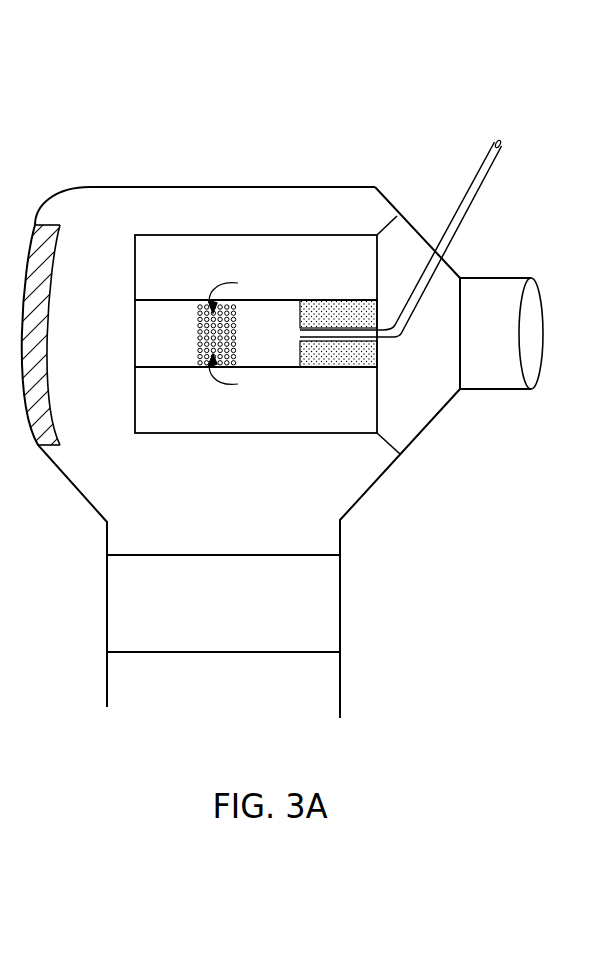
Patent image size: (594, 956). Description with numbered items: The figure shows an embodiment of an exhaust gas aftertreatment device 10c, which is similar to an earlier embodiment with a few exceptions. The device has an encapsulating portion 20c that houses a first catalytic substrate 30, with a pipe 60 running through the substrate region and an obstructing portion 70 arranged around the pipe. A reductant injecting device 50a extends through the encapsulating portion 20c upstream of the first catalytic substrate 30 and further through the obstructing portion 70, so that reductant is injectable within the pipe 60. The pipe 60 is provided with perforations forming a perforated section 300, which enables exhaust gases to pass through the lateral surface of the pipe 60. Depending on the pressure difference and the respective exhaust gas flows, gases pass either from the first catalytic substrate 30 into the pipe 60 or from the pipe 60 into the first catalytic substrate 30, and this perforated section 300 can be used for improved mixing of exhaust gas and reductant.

The exhaust gas aftertreatment device 10c is at (271, 359).
The encapsulating portion 20c is at (288, 187).
The first catalytic substrate 30 is at (352, 279).
The reductant injecting device 50a is at (427, 290).
The pipe 60 is at (170, 348).
The obstructing portion 70 is at (365, 355).
The perforated section 300 is at (197, 333).